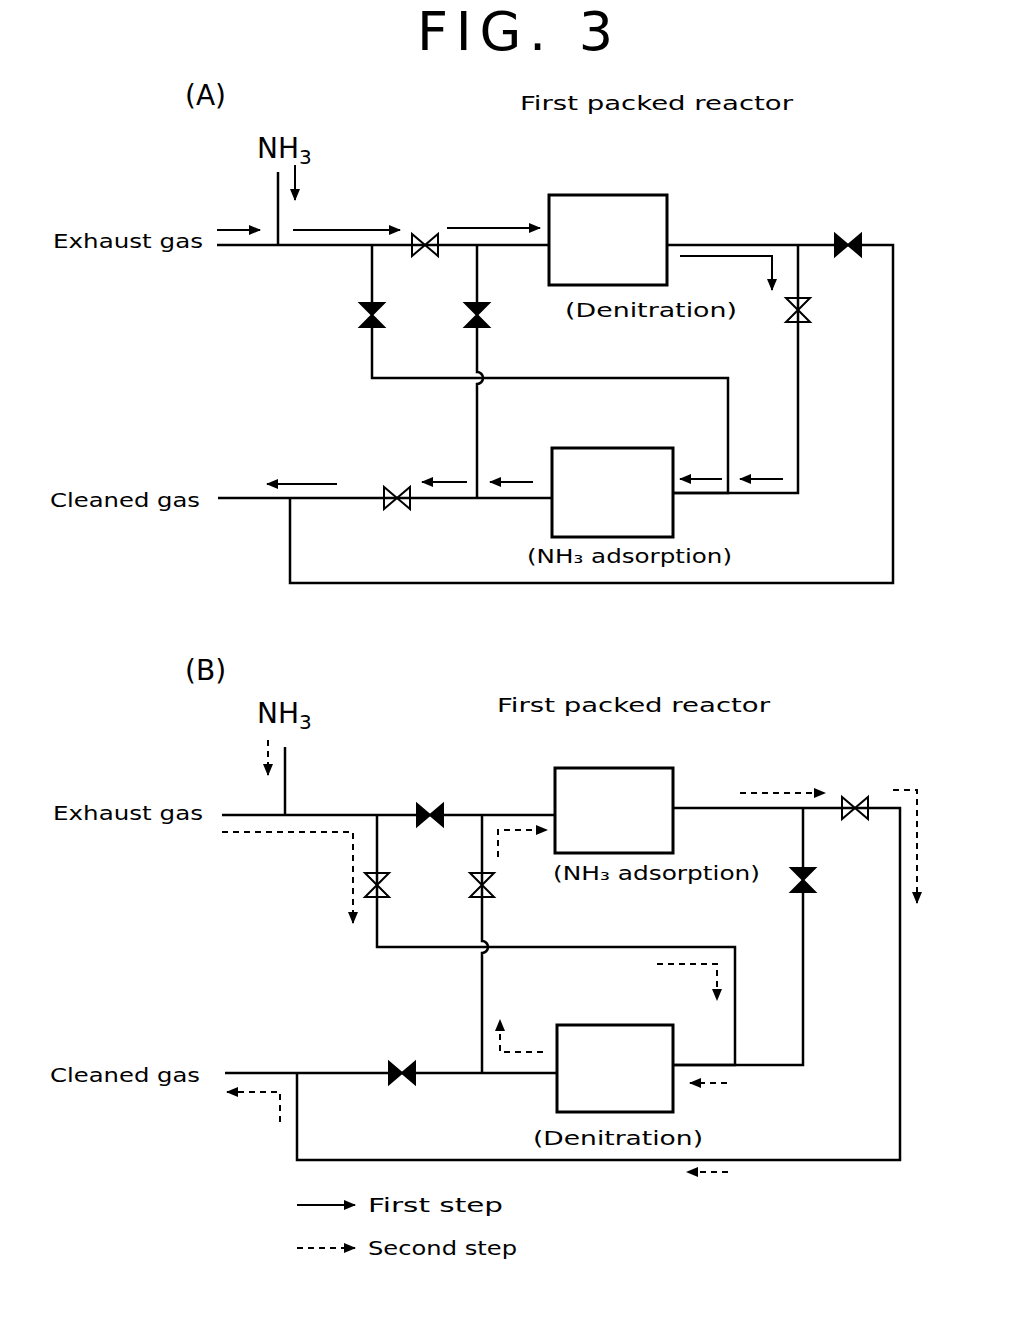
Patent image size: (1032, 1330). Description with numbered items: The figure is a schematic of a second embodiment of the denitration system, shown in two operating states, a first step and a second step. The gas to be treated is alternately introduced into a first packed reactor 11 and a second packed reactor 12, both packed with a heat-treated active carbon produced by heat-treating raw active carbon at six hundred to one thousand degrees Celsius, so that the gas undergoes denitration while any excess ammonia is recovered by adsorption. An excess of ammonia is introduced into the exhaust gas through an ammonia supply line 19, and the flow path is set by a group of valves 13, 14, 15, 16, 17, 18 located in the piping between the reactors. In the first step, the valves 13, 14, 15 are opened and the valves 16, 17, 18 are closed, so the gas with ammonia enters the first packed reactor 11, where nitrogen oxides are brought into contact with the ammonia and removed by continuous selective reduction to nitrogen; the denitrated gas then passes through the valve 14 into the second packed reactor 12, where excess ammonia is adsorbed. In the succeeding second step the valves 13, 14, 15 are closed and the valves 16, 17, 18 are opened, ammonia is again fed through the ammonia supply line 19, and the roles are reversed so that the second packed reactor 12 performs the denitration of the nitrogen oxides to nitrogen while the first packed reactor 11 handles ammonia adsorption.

The first packed reactor 11 is at (608, 195).
The second packed reactor 12 is at (617, 448).
The valve 13 is at (425, 233).
The valve 14 is at (811, 313).
The valve 15 is at (391, 489).
The valve 16 is at (385, 319).
The valve 17 is at (490, 319).
The valve 18 is at (845, 233).
The ammonia supply line 19 is at (281, 217).